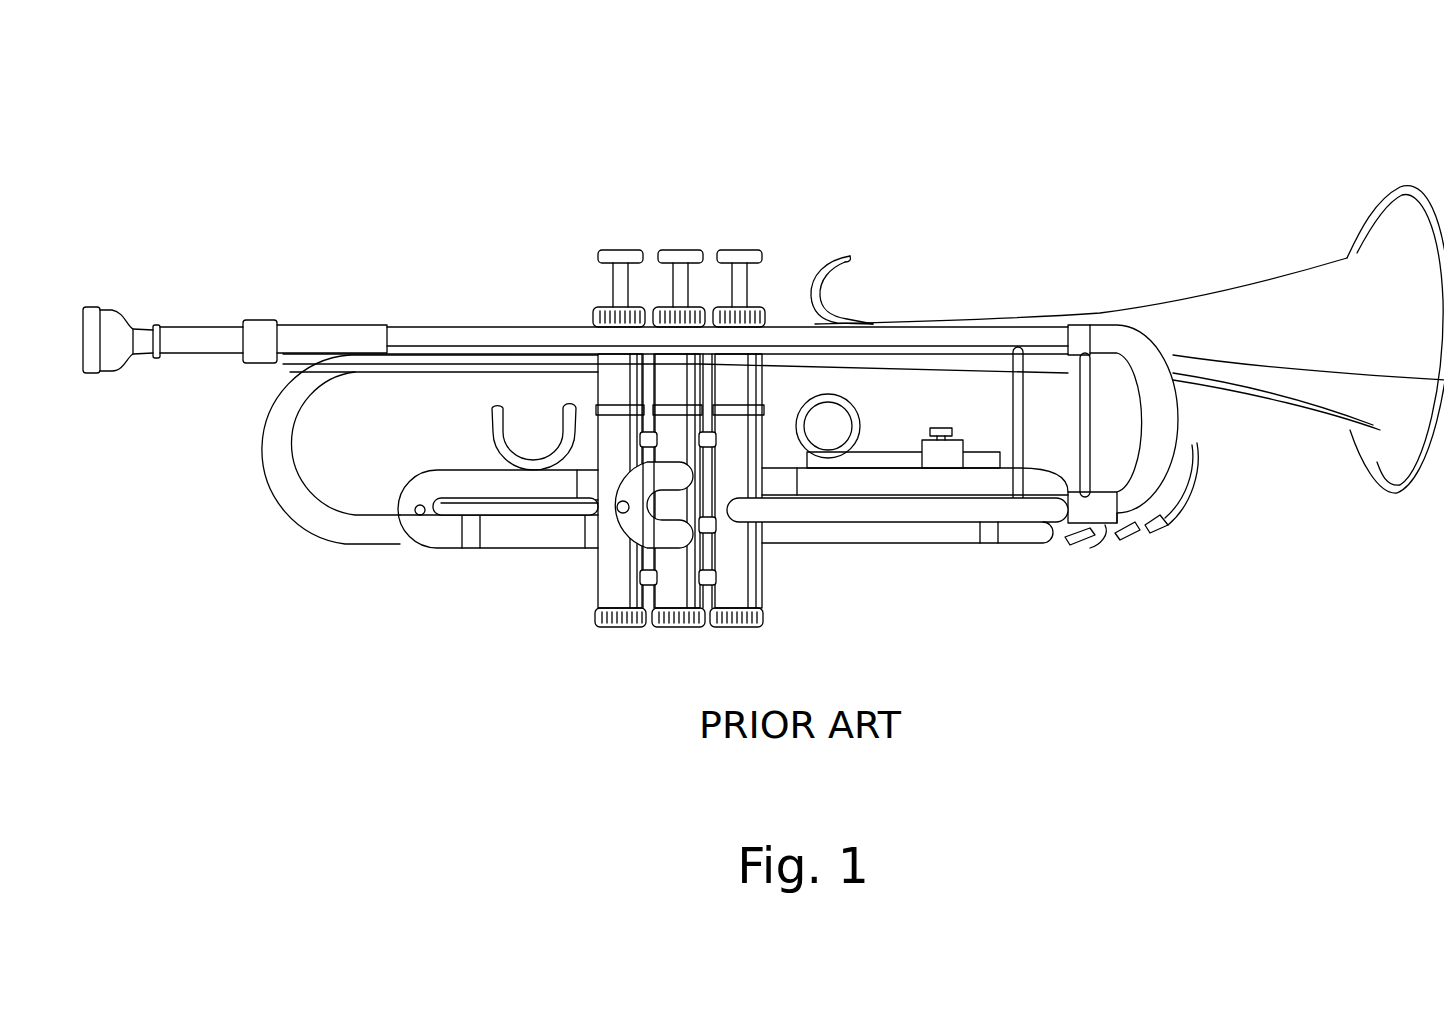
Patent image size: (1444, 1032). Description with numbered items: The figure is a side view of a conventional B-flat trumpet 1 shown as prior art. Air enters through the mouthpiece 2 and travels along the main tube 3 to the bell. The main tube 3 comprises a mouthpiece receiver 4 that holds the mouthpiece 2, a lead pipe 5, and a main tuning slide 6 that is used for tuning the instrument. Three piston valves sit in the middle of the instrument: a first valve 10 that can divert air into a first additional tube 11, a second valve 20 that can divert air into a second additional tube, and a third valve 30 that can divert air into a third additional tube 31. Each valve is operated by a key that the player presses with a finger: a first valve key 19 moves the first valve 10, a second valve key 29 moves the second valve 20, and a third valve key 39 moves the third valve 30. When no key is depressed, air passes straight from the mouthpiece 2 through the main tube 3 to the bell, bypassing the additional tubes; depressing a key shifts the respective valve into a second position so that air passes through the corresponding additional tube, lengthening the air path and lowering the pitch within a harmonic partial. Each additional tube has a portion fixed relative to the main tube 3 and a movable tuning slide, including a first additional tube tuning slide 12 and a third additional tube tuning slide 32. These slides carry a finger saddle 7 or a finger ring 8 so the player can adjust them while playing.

The trumpet 1 is at (452, 152).
The mouthpiece 2 is at (120, 325).
The main tube 3 is at (312, 517).
The mouthpiece receiver 4 is at (305, 330).
The lead pipe 5 is at (1020, 340).
The main tuning slide 6 is at (1168, 445).
The finger saddle 7 is at (497, 430).
The finger ring 8 is at (860, 422).
The first valve 10 is at (605, 430).
The first additional tube 11 is at (542, 525).
The first additional tube tuning slide 12 is at (423, 527).
The first valve key 19 is at (618, 258).
The second valve 20 is at (658, 433).
The second valve key 29 is at (678, 258).
The third valve 30 is at (732, 445).
The third additional tube 31 is at (885, 524).
The third additional tube tuning slide 32 is at (1033, 525).
The third valve key 39 is at (737, 258).